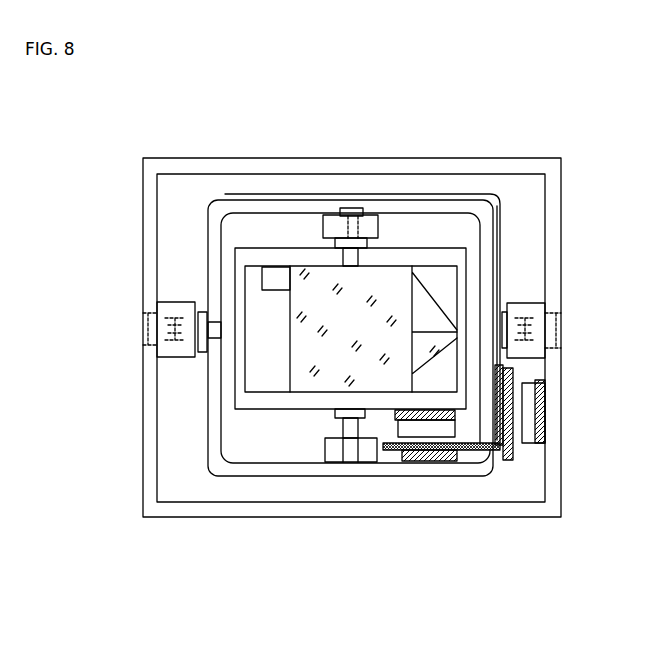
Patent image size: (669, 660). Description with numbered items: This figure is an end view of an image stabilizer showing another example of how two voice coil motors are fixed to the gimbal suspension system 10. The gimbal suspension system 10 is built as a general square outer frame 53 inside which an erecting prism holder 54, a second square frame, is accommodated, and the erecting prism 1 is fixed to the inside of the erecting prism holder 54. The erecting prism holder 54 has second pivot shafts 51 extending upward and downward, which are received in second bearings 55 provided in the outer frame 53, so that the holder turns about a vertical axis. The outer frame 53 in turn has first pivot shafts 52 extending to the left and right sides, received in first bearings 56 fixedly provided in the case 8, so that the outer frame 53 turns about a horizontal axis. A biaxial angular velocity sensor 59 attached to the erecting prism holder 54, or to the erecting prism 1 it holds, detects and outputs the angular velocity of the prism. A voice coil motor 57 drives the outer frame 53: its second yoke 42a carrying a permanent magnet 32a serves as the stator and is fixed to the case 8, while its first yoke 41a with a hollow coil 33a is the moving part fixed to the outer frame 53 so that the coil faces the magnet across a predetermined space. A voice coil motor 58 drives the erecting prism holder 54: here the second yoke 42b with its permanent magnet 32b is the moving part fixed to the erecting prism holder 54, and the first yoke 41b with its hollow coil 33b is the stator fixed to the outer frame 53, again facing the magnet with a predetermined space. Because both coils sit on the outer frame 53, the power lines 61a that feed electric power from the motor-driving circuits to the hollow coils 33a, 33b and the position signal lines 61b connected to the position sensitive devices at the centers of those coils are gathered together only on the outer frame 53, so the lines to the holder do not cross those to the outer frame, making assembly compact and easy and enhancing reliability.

The gimbal suspension system 10 is at (193, 218).
The erecting prism 1 is at (317, 282).
The case 8 is at (528, 170).
The outer frame 53 is at (463, 203).
The erecting prism holder 54 is at (262, 403).
The second bearings 55 is at (370, 227).
The second pivot shafts 51 is at (352, 228).
The first bearings 56 is at (183, 300).
The first pivot shafts 52 is at (163, 318).
The biaxial angular velocity sensor 59 is at (278, 282).
The power lines 61a is at (512, 200).
The position signal lines 61b is at (505, 210).
The second yoke 42a is at (540, 395).
The second yoke 42b is at (358, 462).
The permanent magnet 32a is at (540, 463).
The permanent magnet 32b is at (487, 447).
The hollow coil 33a is at (512, 462).
The hollow coil 33b is at (398, 417).
The first yoke 41a is at (503, 462).
The first yoke 41b is at (401, 462).
The voice coil motor 57 is at (522, 480).
The voice coil motor 58 is at (432, 490).